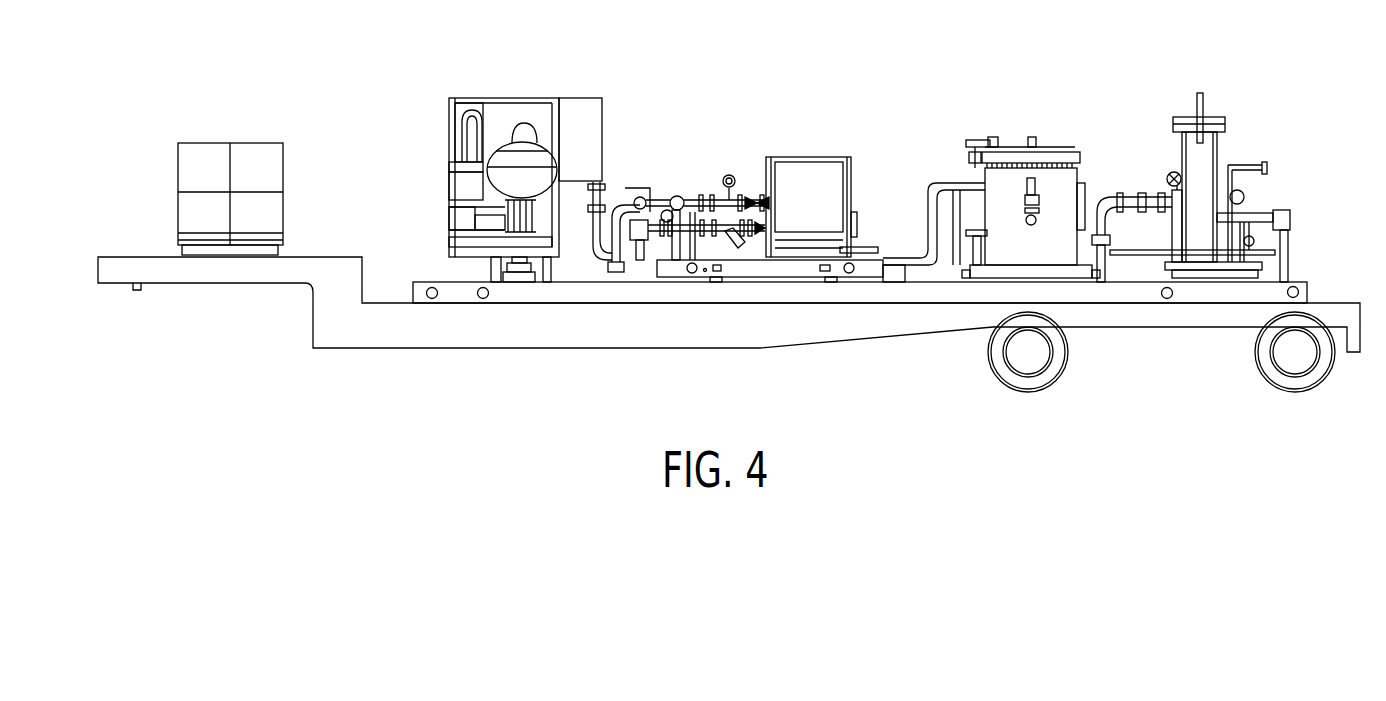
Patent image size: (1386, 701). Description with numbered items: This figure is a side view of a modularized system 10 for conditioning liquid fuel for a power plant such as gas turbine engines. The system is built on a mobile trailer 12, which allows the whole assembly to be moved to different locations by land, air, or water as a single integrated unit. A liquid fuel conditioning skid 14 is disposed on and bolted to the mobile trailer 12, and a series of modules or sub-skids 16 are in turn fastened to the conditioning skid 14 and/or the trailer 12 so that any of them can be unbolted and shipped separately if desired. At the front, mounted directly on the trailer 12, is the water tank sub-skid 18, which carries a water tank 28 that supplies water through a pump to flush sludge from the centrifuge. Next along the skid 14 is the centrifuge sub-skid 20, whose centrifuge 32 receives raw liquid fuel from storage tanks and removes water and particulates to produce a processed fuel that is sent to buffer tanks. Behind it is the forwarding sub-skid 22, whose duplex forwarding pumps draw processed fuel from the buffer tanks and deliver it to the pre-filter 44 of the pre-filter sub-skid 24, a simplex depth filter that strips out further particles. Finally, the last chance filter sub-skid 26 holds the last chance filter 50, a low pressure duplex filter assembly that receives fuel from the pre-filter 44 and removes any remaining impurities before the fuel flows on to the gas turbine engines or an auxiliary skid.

The modularized system 10 is at (729, 196).
The mobile trailer 12 is at (122, 275).
The liquid fuel conditioning skid 14 is at (386, 238).
The modules or sub-skids 16 is at (707, 152).
The water tank sub-skid 18 is at (216, 166).
The centrifuge sub-skid 20 is at (565, 155).
The forwarding sub-skid 22 is at (808, 140).
The pre-filter sub-skid 24 is at (1079, 171).
The last chance filter sub-skid 26 is at (1177, 152).
The water tank 28 is at (176, 90).
The centrifuge 32 is at (508, 147).
The pre-filter 44 is at (1058, 153).
The last chance filter 50 is at (1215, 115).